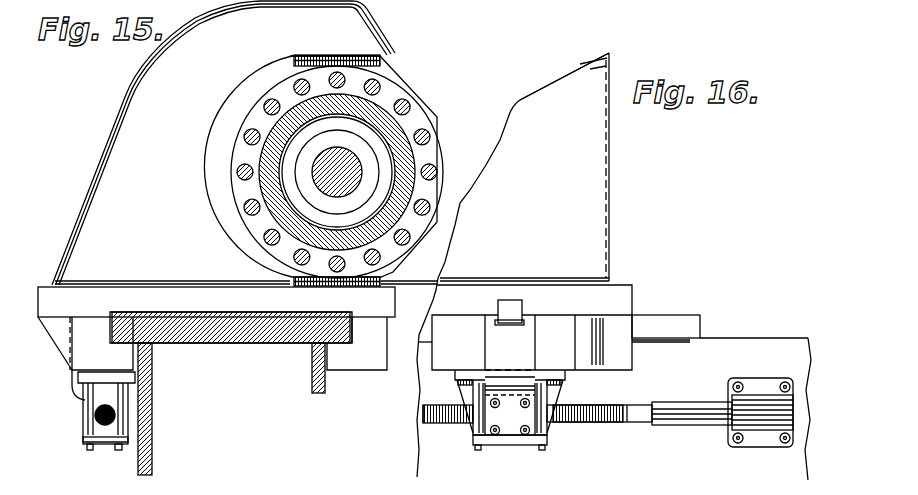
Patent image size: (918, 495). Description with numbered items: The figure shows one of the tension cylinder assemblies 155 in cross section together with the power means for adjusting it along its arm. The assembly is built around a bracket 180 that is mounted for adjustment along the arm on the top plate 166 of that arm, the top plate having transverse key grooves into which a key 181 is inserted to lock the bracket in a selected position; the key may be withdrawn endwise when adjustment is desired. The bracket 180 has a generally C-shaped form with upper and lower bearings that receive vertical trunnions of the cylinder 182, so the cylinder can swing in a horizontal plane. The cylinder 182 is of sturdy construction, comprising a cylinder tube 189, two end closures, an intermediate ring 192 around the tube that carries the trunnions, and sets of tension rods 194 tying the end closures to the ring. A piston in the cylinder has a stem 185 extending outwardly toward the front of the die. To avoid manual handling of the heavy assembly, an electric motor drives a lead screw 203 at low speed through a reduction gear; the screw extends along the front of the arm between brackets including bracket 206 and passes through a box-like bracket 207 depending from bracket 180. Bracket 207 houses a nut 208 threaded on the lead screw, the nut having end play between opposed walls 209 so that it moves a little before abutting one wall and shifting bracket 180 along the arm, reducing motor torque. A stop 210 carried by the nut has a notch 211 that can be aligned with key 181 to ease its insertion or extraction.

In FIG. 15, the tension cylinder assembly 155 is at (408, 71).
In FIG. 16, the tension cylinder assembly 155 is at (613, 173).
In FIG. 15, the top plate 166 is at (235, 340).
In FIG. 16, the top plate 166 is at (678, 322).
In FIG. 15, the bracket 180 is at (118, 108).
In FIG. 16, the bracket 180 is at (598, 222).
In FIG. 16, the key 181 is at (514, 302).
In FIG. 15, the cylinder 182 is at (406, 121).
In FIG. 15, the stem 185 is at (362, 173).
In FIG. 15, the cylinder tube 189 is at (282, 124).
In FIG. 15, the intermediate ring 192 is at (233, 160).
In FIG. 15, the tension rods 194 is at (266, 238).
In FIG. 15, the lead screw 203 is at (116, 417).
In FIG. 16, the lead screw 203 is at (422, 428).
In FIG. 16, the bracket 206 is at (762, 402).
In FIG. 15, the bracket 207 is at (105, 440).
In FIG. 16, the bracket 207 is at (510, 437).
In FIG. 16, the nut 208 is at (482, 400).
In FIG. 15, the opposed walls 209 is at (102, 398).
In FIG. 16, the opposed walls 209 is at (543, 395).
In FIG. 15, the stop 210 is at (68, 375).
In FIG. 16, the stop 210 is at (493, 355).
In FIG. 16, the notch 211 is at (514, 325).